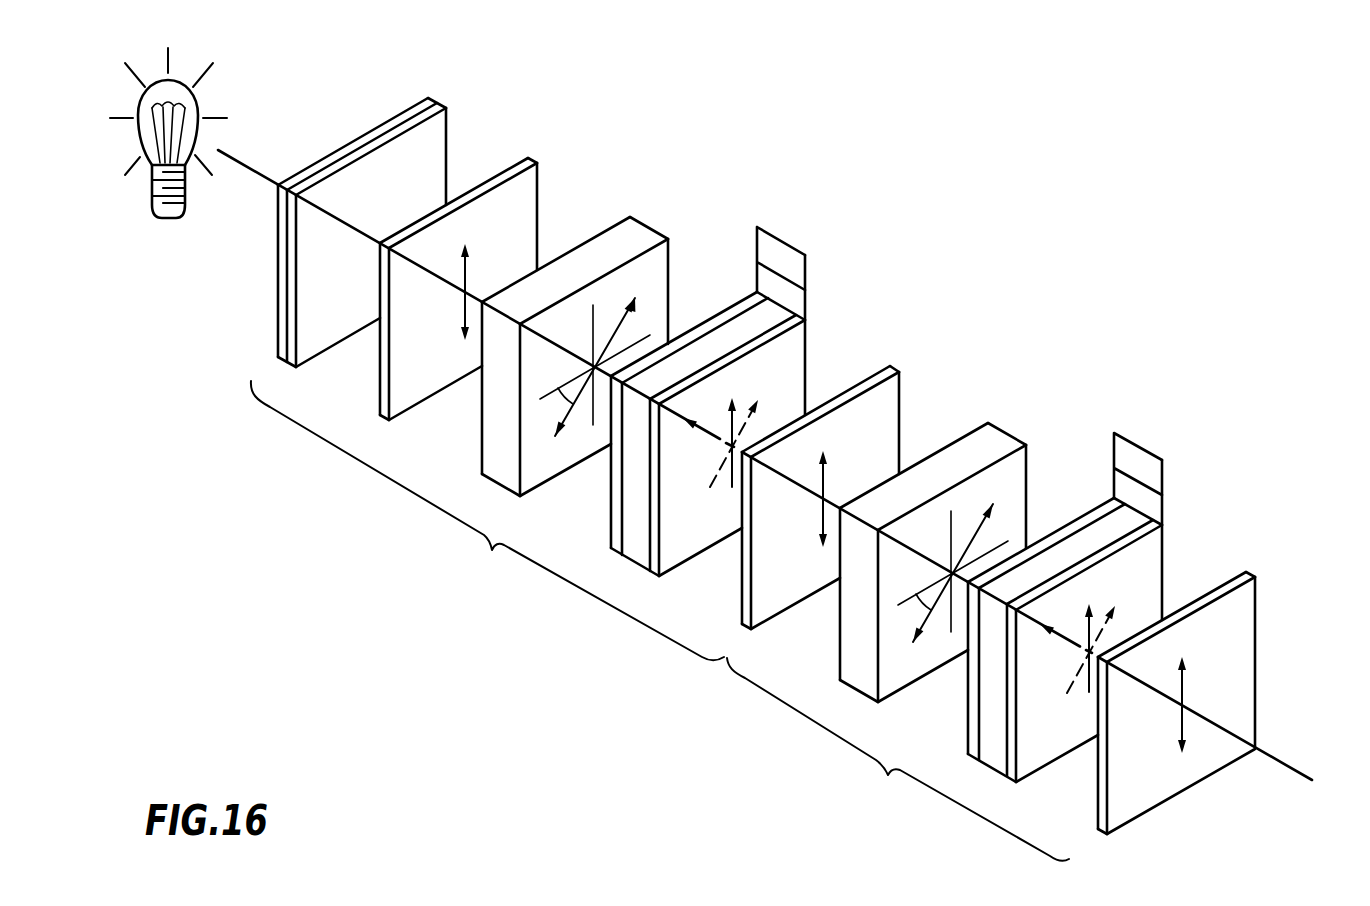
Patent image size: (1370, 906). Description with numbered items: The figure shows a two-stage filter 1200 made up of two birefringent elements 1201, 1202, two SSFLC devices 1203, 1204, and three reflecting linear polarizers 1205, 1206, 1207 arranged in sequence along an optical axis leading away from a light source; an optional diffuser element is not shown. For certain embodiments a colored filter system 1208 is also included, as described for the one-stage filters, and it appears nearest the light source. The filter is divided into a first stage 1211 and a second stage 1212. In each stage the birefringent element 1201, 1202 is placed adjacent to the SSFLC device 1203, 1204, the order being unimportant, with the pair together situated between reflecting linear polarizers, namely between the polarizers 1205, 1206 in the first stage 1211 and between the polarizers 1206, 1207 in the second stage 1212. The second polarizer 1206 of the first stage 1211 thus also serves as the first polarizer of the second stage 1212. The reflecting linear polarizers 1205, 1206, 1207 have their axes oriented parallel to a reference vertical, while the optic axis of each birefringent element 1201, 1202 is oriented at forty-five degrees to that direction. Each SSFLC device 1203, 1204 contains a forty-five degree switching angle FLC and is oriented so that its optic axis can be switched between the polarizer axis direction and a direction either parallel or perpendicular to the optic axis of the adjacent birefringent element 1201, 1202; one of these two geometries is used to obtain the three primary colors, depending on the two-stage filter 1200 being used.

The 2-stage filter 1200 is at (1001, 137).
The colored filter system 1208 is at (432, 97).
The reflecting linear polarizer 1205 is at (530, 157).
The birefringent element 1201 is at (632, 216).
The SSFLC device 1203 is at (715, 315).
The reflecting linear polarizer 1206 is at (892, 366).
The birefringent element 1202 is at (971, 432).
The SSFLC device 1204 is at (1077, 519).
The reflecting linear polarizer 1207 is at (1250, 572).
The first stage 1211 is at (491, 551).
The second stage 1212 is at (887, 775).